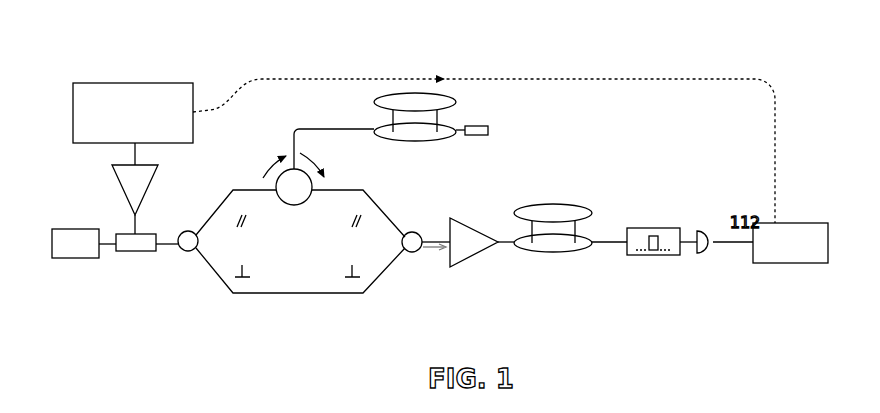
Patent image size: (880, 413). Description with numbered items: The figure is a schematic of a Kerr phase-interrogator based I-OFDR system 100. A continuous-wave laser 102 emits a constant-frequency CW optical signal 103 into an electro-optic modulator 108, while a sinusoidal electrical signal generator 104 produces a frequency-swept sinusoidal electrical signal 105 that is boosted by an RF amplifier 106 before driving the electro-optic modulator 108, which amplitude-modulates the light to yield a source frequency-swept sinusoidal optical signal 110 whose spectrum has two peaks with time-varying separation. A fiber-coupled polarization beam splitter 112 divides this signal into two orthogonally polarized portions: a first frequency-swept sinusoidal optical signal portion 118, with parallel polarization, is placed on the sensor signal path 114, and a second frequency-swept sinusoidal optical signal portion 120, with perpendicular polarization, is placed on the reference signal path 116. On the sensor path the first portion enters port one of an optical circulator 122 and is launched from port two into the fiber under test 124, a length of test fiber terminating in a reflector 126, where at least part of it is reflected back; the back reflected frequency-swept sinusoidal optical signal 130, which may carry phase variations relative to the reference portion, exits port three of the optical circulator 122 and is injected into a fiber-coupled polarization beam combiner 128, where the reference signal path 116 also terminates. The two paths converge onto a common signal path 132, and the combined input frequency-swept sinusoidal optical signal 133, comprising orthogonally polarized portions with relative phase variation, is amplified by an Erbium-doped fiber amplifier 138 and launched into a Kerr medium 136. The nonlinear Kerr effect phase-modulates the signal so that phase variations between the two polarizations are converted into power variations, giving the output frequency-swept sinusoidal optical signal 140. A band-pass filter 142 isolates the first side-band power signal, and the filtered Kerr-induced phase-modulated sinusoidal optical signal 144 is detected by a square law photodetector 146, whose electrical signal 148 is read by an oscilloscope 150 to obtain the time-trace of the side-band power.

The Kerr phase-interrogator based I-OFDR system 100 is at (428, 17).
The continuous-wave laser 102 is at (70, 261).
The CW optical signal 103 is at (108, 246).
The sinusoidal electrical signal generator 104 is at (131, 80).
The sinusoidal electrical signal 105 is at (132, 152).
The RF amplifier 106 is at (118, 189).
The electro-optic modulator 108 is at (136, 254).
The source frequency-swept sinusoidal optical signal 110 is at (170, 249).
The fiber-coupled polarization beam splitter 112 is at (186, 230).
The sensor signal path 114 is at (219, 198).
The reference signal path 116 is at (221, 290).
The first frequency-swept sinusoidal optical signal portion 118 is at (245, 225).
The second frequency-swept sinusoidal optical signal portion 120 is at (256, 276).
The optical circulator 122 is at (297, 206).
The fiber under test 124 is at (384, 118).
The reflector 126 is at (491, 129).
The fiber-coupled polarization beam combiner 128 is at (414, 254).
The back reflected frequency-swept sinusoidal optical signal 130 is at (359, 226).
The common signal path 132 is at (416, 232).
The input frequency-swept sinusoidal optical signal 133 is at (433, 253).
The Kerr medium 136 is at (549, 200).
The Erbium-doped fiber amplifier 138 is at (461, 220).
The output frequency-swept sinusoidal optical signal 140 is at (611, 251).
The band-pass filter 142 is at (644, 224).
The filtered Kerr-induced phase-modulated sinusoidal optical signal 144 is at (688, 237).
The photodetector 146 is at (706, 258).
The electrical signal 148 is at (733, 239).
The oscilloscope 150 is at (791, 222).